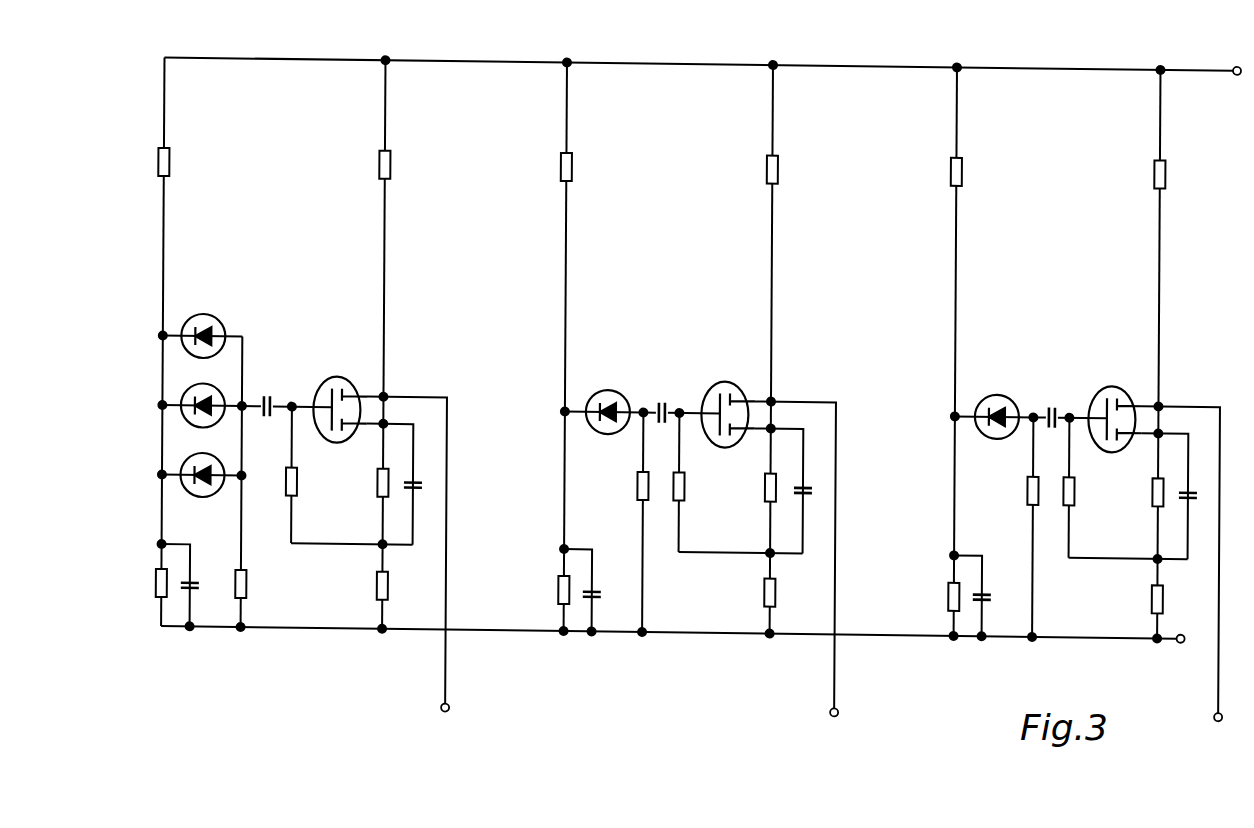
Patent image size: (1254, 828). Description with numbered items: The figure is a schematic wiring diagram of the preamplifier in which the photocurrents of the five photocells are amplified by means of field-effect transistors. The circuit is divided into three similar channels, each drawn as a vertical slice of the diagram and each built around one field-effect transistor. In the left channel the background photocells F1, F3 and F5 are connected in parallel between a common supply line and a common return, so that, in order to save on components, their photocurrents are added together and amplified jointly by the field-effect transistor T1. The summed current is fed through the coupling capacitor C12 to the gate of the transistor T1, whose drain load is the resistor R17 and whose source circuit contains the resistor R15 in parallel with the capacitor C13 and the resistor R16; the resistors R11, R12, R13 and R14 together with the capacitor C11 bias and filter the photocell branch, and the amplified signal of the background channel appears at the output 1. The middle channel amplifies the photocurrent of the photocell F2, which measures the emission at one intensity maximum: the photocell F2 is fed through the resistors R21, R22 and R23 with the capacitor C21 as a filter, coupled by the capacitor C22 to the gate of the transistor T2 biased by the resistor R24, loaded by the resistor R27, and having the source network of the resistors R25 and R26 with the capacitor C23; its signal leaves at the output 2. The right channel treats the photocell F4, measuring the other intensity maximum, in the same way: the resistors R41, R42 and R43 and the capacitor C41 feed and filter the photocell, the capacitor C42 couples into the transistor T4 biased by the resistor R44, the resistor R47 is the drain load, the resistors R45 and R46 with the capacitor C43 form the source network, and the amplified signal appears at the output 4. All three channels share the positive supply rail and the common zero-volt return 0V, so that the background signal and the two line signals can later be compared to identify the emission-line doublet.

The resistor R11 is at (142, 161).
The resistor R12 is at (140, 584).
The resistor R13 is at (257, 586).
The resistor R14 is at (271, 474).
The resistor R15 is at (361, 484).
The resistor R16 is at (361, 586).
The resistor R17 is at (362, 164).
The resistor R21 is at (545, 167).
The resistor R22 is at (543, 589).
The resistor R23 is at (621, 524).
The resistor R24 is at (689, 482).
The resistor R25 is at (748, 487).
The resistor R26 is at (747, 592).
The resistor R27 is at (751, 170).
The resistor R41 is at (934, 171).
The resistor R42 is at (932, 596).
The resistor R43 is at (1012, 529).
The resistor R44 is at (1079, 488).
The resistor R45 is at (1135, 492).
The resistor R46 is at (1133, 599).
The resistor R47 is at (1137, 174).
The capacitor C11 is at (190, 587).
The capacitor C12 is at (287, 395).
The capacitor C13 is at (399, 484).
The capacitor C21 is at (600, 592).
The capacitor C22 is at (681, 401).
The capacitor C23 is at (790, 490).
The capacitor C41 is at (990, 597).
The capacitor C42 is at (1067, 406).
The capacitor C43 is at (1176, 496).
The photocell F1 is at (203, 326).
The photocell F2 is at (604, 401).
The photocell F3 is at (202, 396).
The photocell F4 is at (994, 405).
The photocell F5 is at (202, 465).
The field-effect transistor T1 is at (340, 398).
The field-effect transistor T2 is at (728, 402).
The field-effect transistor T4 is at (1115, 409).
The output 1 is at (408, 556).
The output 2 is at (796, 560).
The output 4 is at (1182, 564).
The zero-volt reference 0V is at (674, 642).